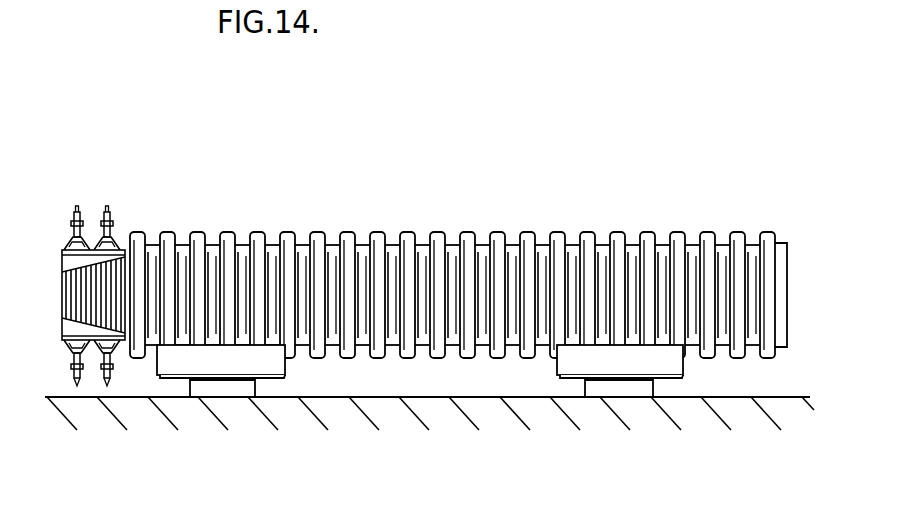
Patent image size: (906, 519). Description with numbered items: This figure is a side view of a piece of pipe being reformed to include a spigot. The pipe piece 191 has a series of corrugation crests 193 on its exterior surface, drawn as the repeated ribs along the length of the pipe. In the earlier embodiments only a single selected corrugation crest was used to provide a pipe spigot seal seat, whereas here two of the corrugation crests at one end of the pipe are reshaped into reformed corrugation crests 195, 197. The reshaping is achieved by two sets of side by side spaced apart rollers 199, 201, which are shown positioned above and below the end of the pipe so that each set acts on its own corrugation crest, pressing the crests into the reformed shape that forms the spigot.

The pipe piece 191 is at (458, 262).
The corrugation crests 193 is at (228, 232).
The reformed corrugation crest 195 is at (91, 248).
The reformed corrugation crest 197 is at (114, 241).
The rollers 199 is at (77, 211).
The rollers 201 is at (108, 211).